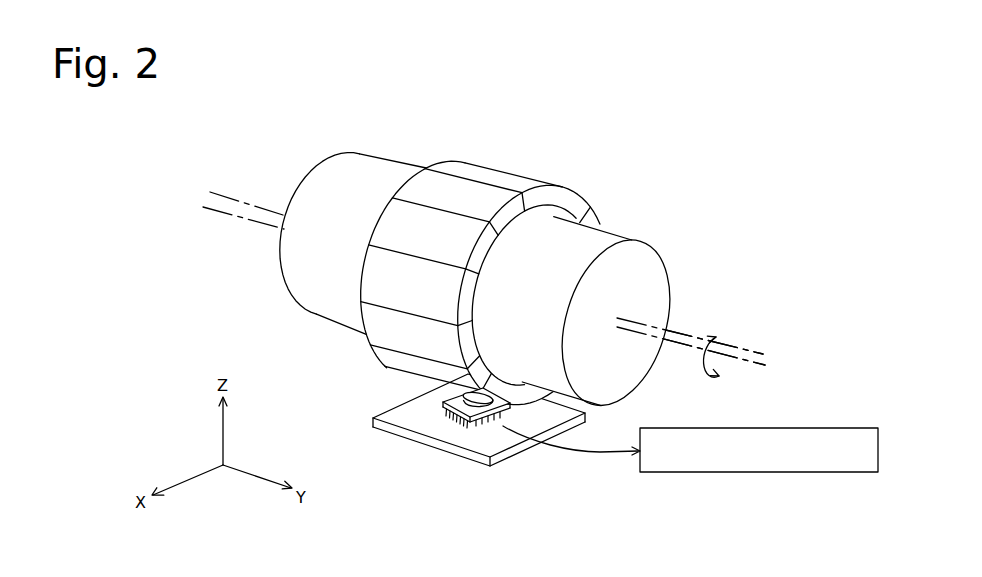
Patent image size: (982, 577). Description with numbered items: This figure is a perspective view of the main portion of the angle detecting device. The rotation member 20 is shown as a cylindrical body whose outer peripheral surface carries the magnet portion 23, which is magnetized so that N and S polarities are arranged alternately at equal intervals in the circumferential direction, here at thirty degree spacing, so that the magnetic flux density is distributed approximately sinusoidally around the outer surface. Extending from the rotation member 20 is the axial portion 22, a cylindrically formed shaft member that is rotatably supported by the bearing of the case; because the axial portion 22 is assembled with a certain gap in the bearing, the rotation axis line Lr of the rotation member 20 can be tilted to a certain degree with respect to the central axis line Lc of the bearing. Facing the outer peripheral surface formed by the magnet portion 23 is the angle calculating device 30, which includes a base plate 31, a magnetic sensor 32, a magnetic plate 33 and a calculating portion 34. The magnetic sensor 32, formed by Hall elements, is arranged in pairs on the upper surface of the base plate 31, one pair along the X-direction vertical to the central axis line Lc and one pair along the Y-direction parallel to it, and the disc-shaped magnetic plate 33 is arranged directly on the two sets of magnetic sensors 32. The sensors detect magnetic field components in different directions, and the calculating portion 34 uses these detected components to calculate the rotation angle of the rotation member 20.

The rotation member 20 is at (506, 290).
The axial portion 22 is at (602, 237).
The magnet portion 23 is at (440, 160).
The angle calculating device 30 is at (432, 441).
The base plate 31 is at (410, 440).
The magnetic sensor 32 is at (463, 394).
The magnetic plate 33 is at (480, 406).
The calculating portion 34 is at (693, 473).
The central axis line Lc is at (737, 342).
The rotation axis line Lr is at (750, 362).